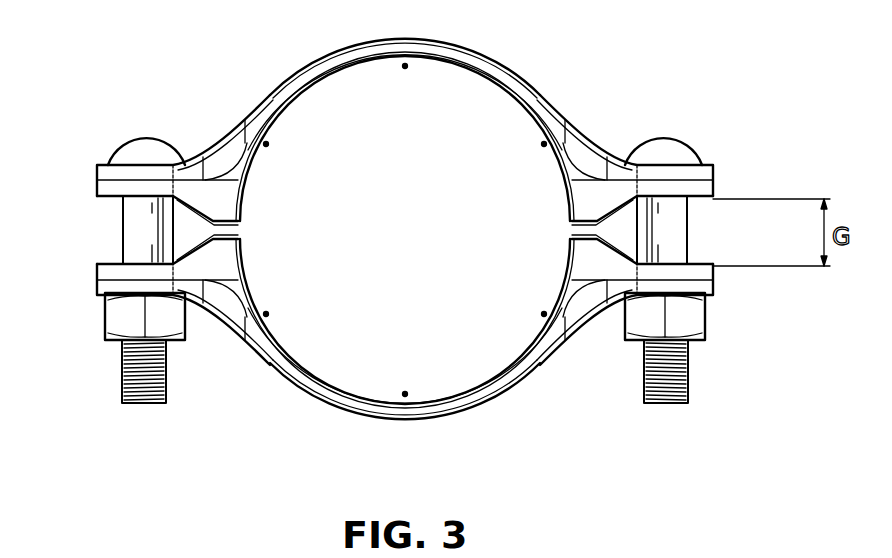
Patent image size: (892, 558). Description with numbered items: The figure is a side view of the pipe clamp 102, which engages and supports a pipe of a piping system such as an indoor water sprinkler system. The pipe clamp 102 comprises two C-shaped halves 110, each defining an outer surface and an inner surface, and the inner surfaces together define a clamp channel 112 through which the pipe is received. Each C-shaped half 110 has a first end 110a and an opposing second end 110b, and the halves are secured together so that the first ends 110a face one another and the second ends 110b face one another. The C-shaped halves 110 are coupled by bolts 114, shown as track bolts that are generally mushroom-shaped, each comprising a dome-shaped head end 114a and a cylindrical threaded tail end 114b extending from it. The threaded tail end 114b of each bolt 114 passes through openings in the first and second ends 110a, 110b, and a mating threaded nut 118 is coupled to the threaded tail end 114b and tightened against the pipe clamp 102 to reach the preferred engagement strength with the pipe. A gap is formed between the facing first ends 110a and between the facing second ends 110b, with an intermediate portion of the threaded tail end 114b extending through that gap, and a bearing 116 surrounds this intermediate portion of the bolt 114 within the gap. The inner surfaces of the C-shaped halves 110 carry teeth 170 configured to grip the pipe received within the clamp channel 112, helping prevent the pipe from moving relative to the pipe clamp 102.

The pipe clamp 102 is at (410, 261).
The C-shaped halves 110 is at (411, 253).
The first end 110a is at (228, 128).
The second end 110b is at (597, 140).
The clamp channel 112 is at (352, 142).
The bolt 114 is at (410, 298).
The dome-shaped head end 114a is at (127, 163).
The threaded tail end 114b is at (150, 400).
The bearing 116 is at (130, 230).
The nut 118 is at (113, 320).
The teeth 170 is at (266, 312).